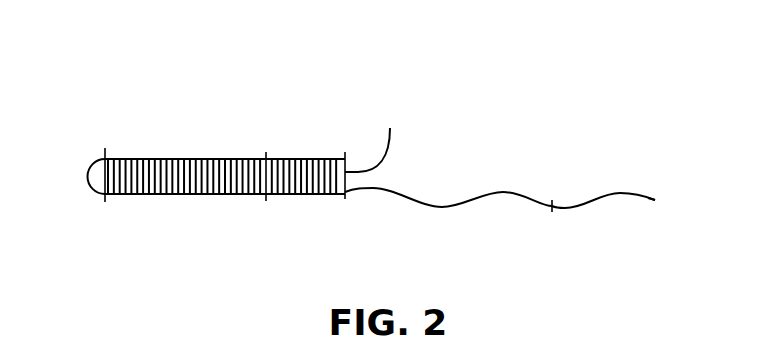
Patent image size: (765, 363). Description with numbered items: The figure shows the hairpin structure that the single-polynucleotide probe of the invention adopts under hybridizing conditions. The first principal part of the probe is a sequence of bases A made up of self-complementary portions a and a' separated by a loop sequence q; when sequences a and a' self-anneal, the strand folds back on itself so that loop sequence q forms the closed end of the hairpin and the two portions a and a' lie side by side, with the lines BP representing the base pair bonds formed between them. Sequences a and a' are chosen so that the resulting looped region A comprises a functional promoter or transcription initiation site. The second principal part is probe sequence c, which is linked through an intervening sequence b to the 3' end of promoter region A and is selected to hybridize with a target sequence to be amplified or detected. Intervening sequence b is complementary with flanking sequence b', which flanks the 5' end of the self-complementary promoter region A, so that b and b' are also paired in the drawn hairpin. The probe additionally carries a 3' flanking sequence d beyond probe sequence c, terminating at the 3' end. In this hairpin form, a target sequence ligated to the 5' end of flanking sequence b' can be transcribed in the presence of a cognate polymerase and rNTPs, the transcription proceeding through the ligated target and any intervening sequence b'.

The sequence of bases A is at (107, 113).
The self-complementary portion a' is at (185, 139).
The self-complementary portion a is at (185, 188).
The flanking sequence b' is at (305, 140).
The intervening sequence b is at (305, 190).
The loop sequence q is at (84, 176).
The 5' end 5' is at (356, 157).
The base pair bonds BP is at (380, 137).
The probe sequence c is at (448, 210).
The 3' flanking sequence d is at (603, 213).
The 3' end 3' is at (664, 200).